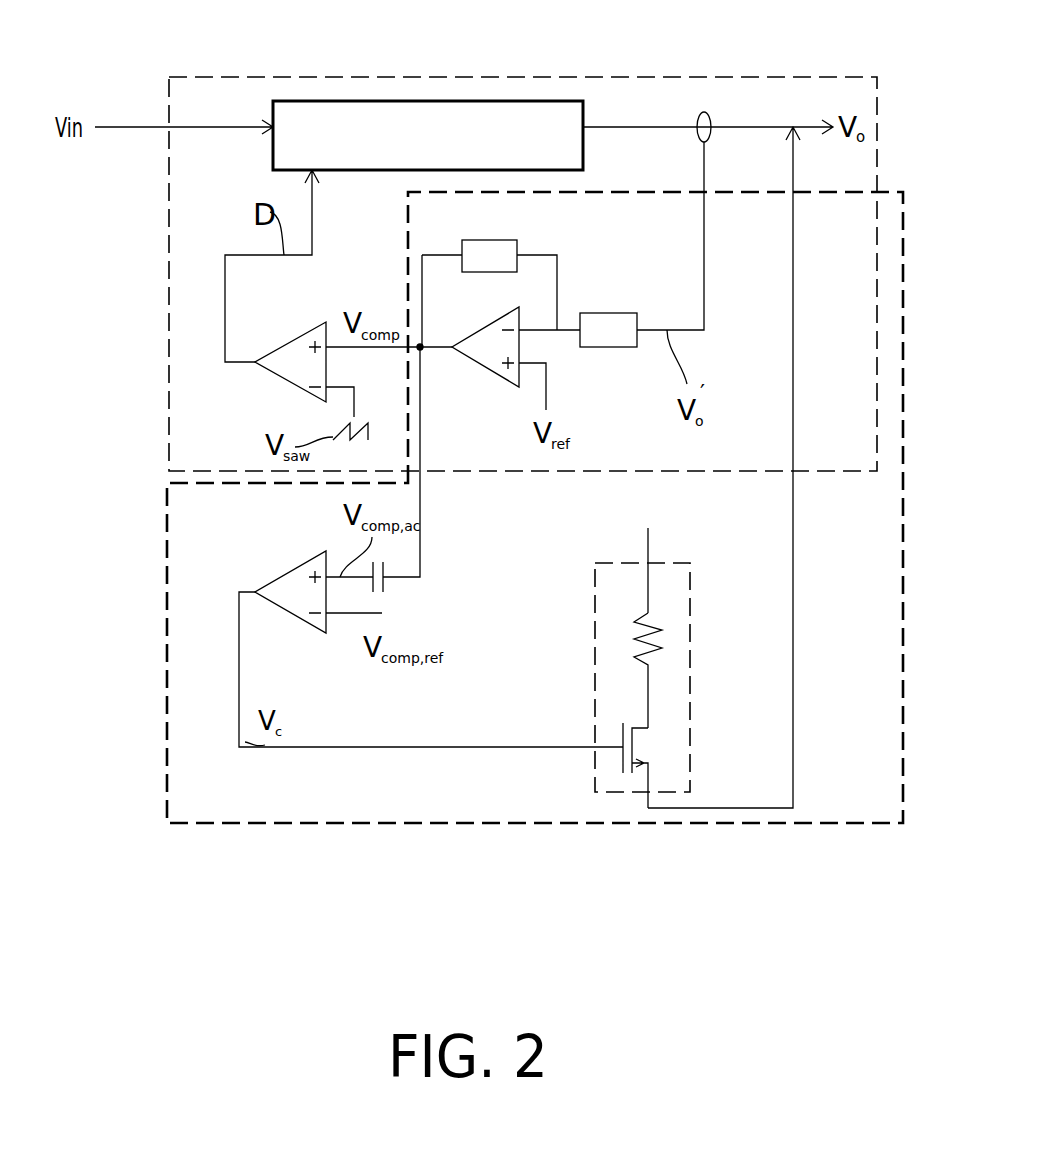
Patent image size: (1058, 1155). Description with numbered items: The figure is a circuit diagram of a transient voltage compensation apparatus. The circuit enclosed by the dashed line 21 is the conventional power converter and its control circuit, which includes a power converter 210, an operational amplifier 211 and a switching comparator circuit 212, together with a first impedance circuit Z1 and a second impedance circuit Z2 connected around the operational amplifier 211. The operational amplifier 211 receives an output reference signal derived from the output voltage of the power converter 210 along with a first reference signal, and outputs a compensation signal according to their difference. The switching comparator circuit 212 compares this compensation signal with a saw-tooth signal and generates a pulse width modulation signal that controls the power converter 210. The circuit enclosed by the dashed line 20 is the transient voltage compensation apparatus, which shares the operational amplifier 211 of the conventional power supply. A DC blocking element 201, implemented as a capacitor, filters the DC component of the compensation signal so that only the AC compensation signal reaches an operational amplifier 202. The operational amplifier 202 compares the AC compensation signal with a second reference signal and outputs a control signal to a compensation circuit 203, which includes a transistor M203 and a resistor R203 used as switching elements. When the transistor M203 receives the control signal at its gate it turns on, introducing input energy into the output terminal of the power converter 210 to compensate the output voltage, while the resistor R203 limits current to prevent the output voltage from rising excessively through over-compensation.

The transient voltage compensation apparatus circuit 20 is at (167, 535).
The power converter and control circuit thereof 21 is at (168, 320).
The power converter 210 is at (430, 101).
The operational amplifier 211 is at (482, 366).
The switching comparator circuit 212 is at (300, 336).
The first impedance circuit Z1 is at (613, 313).
The second impedance circuit Z2 is at (490, 240).
The DC blocking element 201 is at (386, 585).
The operational amplifier 202 is at (297, 617).
The compensation circuit 203 is at (678, 563).
The resistor R203 is at (670, 633).
The transistor M203 is at (650, 752).